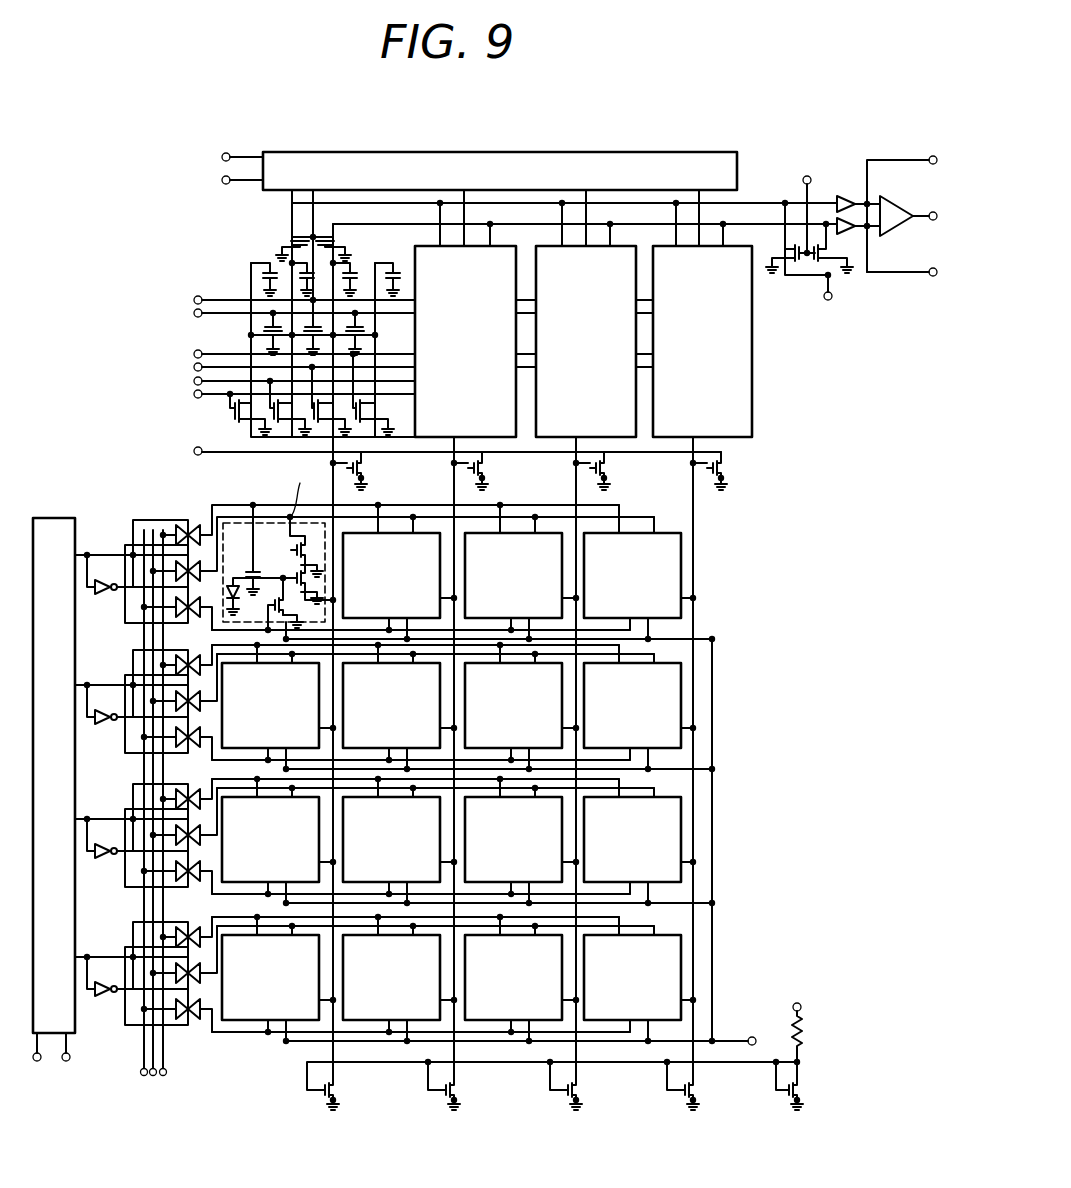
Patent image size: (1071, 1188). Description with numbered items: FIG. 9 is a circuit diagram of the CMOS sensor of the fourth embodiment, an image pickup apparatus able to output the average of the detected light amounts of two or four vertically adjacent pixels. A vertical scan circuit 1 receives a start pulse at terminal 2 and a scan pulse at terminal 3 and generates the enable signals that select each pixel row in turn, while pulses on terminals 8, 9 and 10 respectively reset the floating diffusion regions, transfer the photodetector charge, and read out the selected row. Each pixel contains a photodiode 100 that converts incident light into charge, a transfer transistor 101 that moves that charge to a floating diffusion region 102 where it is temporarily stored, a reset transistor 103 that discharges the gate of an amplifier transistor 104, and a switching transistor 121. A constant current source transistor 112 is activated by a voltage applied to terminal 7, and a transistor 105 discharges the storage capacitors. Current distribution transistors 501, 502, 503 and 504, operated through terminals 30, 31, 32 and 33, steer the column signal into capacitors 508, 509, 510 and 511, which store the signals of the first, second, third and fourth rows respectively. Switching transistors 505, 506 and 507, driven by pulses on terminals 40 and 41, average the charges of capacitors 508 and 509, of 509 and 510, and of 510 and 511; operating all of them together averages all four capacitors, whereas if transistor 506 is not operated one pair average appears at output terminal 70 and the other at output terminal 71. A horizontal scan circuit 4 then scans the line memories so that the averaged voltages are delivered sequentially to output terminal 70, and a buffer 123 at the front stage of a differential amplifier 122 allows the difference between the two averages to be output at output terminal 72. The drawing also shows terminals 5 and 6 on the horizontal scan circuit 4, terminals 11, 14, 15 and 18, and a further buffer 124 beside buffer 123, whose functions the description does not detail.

The vertical scan circuit 1 is at (58, 518).
The terminal 2 is at (38, 1061).
The terminal 3 is at (66, 1061).
The horizontal scan circuit 4 is at (678, 152).
The input terminal 5 is at (222, 157).
The input terminal 6 is at (222, 180).
The terminal 7 is at (801, 1004).
The terminal 8 is at (142, 1076).
The terminal 9 is at (153, 1076).
The terminal 10 is at (165, 1076).
The bit line reset input 11 is at (194, 452).
The sense control input 14 is at (803, 178).
The reference terminal 15 is at (826, 300).
The source line terminal 18 is at (752, 1036).
The terminal 30 is at (194, 394).
The terminal 31 is at (194, 381).
The terminal 32 is at (194, 367).
The terminal 33 is at (194, 354).
The terminal 40 is at (194, 313).
The terminal 41 is at (194, 300).
The output terminal 70 is at (933, 156).
The output terminal 71 is at (933, 276).
The output terminal 72 is at (933, 220).
The photodiode 100 is at (223, 525).
The transfer transistor 101 is at (250, 560).
The floating diffusion region 102 is at (268, 635).
The reset transistor 103 is at (300, 604).
The amplifier transistor 104 is at (322, 582).
The transistor 105 is at (366, 478).
The constant current source transistor 112 is at (310, 1100).
The switching transistor 121 is at (320, 548).
The differential amplifier 122 is at (895, 200).
The buffer 123 is at (848, 232).
The buffer 124 is at (840, 196).
The current distribution transistor 501 is at (238, 428).
The current distribution transistor 502 is at (285, 410).
The current distribution transistor 503 is at (325, 408).
The current distribution transistor 504 is at (372, 408).
The switching transistor 505 is at (262, 300).
The switching transistor 506 is at (268, 346).
The switching transistor 507 is at (362, 332).
The capacitor 508 is at (270, 272).
The capacitor 509 is at (300, 240).
The capacitor 510 is at (340, 270).
The capacitor 511 is at (410, 270).